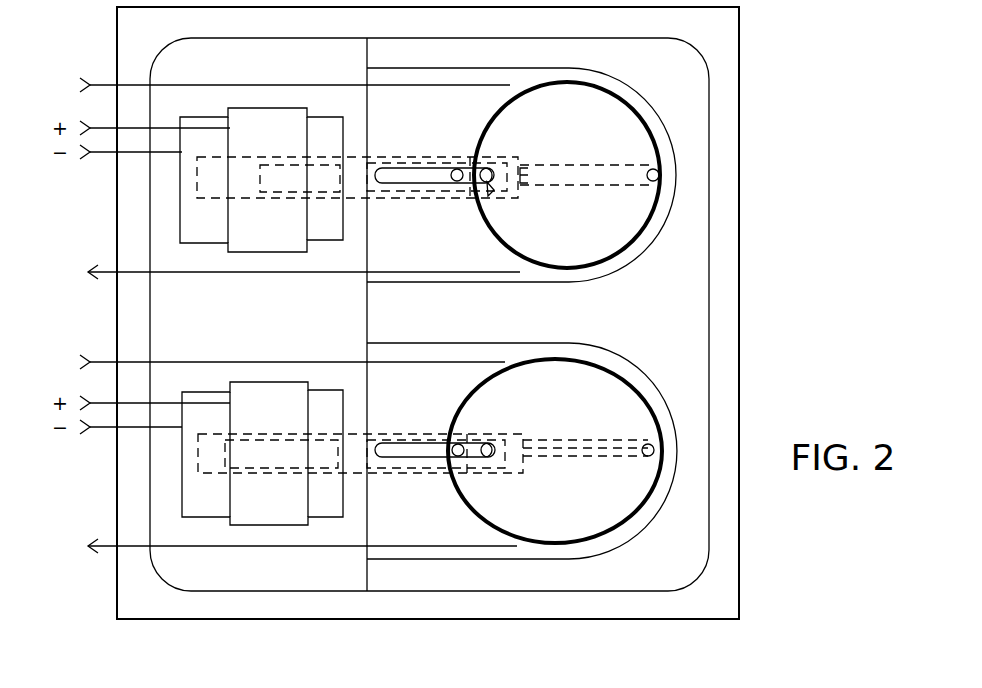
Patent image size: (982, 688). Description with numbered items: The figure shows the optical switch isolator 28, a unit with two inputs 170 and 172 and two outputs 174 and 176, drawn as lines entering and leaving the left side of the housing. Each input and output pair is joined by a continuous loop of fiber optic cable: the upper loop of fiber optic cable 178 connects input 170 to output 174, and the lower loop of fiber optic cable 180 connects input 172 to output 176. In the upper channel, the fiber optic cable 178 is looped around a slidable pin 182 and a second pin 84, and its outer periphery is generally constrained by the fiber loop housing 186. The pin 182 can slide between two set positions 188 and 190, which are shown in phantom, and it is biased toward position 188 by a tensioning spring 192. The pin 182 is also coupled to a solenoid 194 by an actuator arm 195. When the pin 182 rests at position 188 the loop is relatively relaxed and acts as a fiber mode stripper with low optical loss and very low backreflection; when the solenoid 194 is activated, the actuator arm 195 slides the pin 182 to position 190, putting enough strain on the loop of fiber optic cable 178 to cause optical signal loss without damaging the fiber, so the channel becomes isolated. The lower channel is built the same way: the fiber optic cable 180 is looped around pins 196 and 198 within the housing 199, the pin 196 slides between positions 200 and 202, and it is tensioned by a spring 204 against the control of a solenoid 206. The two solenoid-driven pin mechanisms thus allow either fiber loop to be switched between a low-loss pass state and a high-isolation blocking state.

The optical switch isolator 28 is at (472, 622).
The input 170 is at (270, 85).
The input 172 is at (267, 362).
The output 174 is at (280, 272).
The output 176 is at (278, 546).
The pivot pin 84 is at (662, 183).
The fiber optic cable 178 is at (648, 115).
The fiber optic cable 180 is at (662, 413).
The pin 182 is at (492, 193).
The fiber loop housing 186 is at (595, 68).
The set position 188 is at (498, 155).
The set position 190 is at (448, 160).
The tensioning spring 192 is at (582, 175).
The solenoid 194 is at (212, 215).
The actuator arm 195 is at (355, 187).
The pin 196 is at (472, 458).
The pin 198 is at (665, 457).
The housing 199 is at (593, 553).
The position 200 is at (467, 435).
The position 202 is at (498, 433).
The spring 204 is at (557, 450).
The solenoid 206 is at (207, 492).